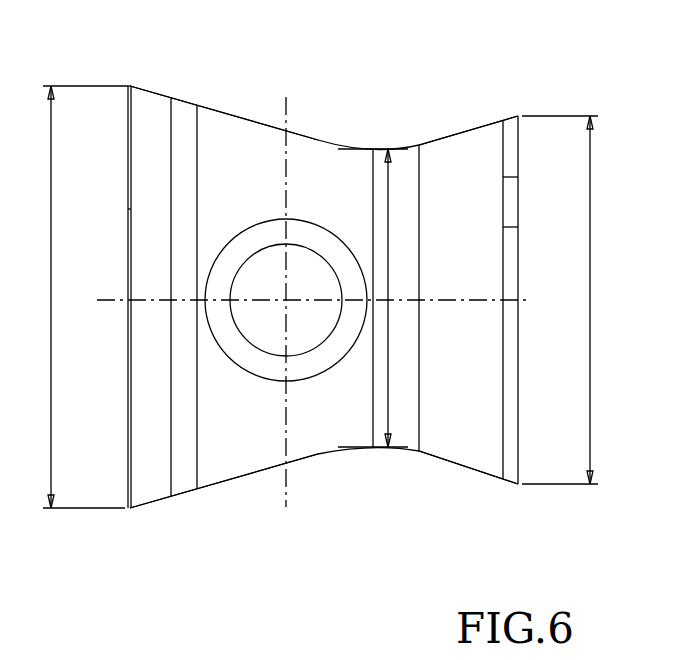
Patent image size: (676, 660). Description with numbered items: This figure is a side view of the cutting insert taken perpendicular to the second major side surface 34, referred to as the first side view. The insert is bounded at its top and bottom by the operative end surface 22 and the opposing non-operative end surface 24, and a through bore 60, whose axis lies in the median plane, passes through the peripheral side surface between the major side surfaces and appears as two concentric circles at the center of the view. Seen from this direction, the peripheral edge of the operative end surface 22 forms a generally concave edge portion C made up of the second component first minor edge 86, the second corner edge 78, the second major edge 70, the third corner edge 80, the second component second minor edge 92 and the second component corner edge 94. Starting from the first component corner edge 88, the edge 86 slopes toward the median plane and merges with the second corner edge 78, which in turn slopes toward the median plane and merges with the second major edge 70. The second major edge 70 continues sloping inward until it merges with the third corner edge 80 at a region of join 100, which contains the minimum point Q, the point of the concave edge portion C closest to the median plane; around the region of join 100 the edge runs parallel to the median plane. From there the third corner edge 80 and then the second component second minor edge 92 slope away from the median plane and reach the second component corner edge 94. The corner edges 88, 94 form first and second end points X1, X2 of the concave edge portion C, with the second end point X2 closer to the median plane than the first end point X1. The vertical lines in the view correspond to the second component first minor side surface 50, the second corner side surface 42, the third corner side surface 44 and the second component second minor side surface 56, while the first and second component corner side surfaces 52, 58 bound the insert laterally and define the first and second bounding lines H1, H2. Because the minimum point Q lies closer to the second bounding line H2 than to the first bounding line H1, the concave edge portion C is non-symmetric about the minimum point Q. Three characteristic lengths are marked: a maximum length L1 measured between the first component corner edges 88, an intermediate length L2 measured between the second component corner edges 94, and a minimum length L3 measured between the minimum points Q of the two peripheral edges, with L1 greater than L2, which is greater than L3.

The operative end surface 22 is at (337, 83).
The non-operative end surface 24 is at (359, 488).
The second major side surface 34 is at (242, 450).
The second corner side surface 42 is at (182, 472).
The third corner side surface 44 is at (406, 415).
The second component first minor side surface 50 is at (148, 473).
The first component corner side surface 52 is at (128, 158).
The second component second minor side surface 56 is at (476, 437).
The second component corner side surface 58 is at (512, 227).
The through bore 60 is at (297, 352).
The second major edge 70 is at (230, 114).
The second corner edge 78 is at (183, 101).
The third corner edge 80 is at (397, 147).
The second component first minor edge 86 is at (150, 92).
The first component corner edge 88 is at (130, 86).
The second component second minor edge 92 is at (463, 131).
The second component corner edge 94 is at (513, 117).
The region of join 100 is at (372, 143).
The first end point X1 is at (128, 90).
The second end point X2 is at (519, 116).
The first bounding line H1 is at (128, 209).
The second bounding line H2 is at (517, 177).
The maximum length L1 is at (74, 297).
The intermediate length L2 is at (573, 300).
The minimum length L3 is at (373, 298).
The generally concave edge portion C is at (267, 128).
The minimum point Q is at (373, 149).